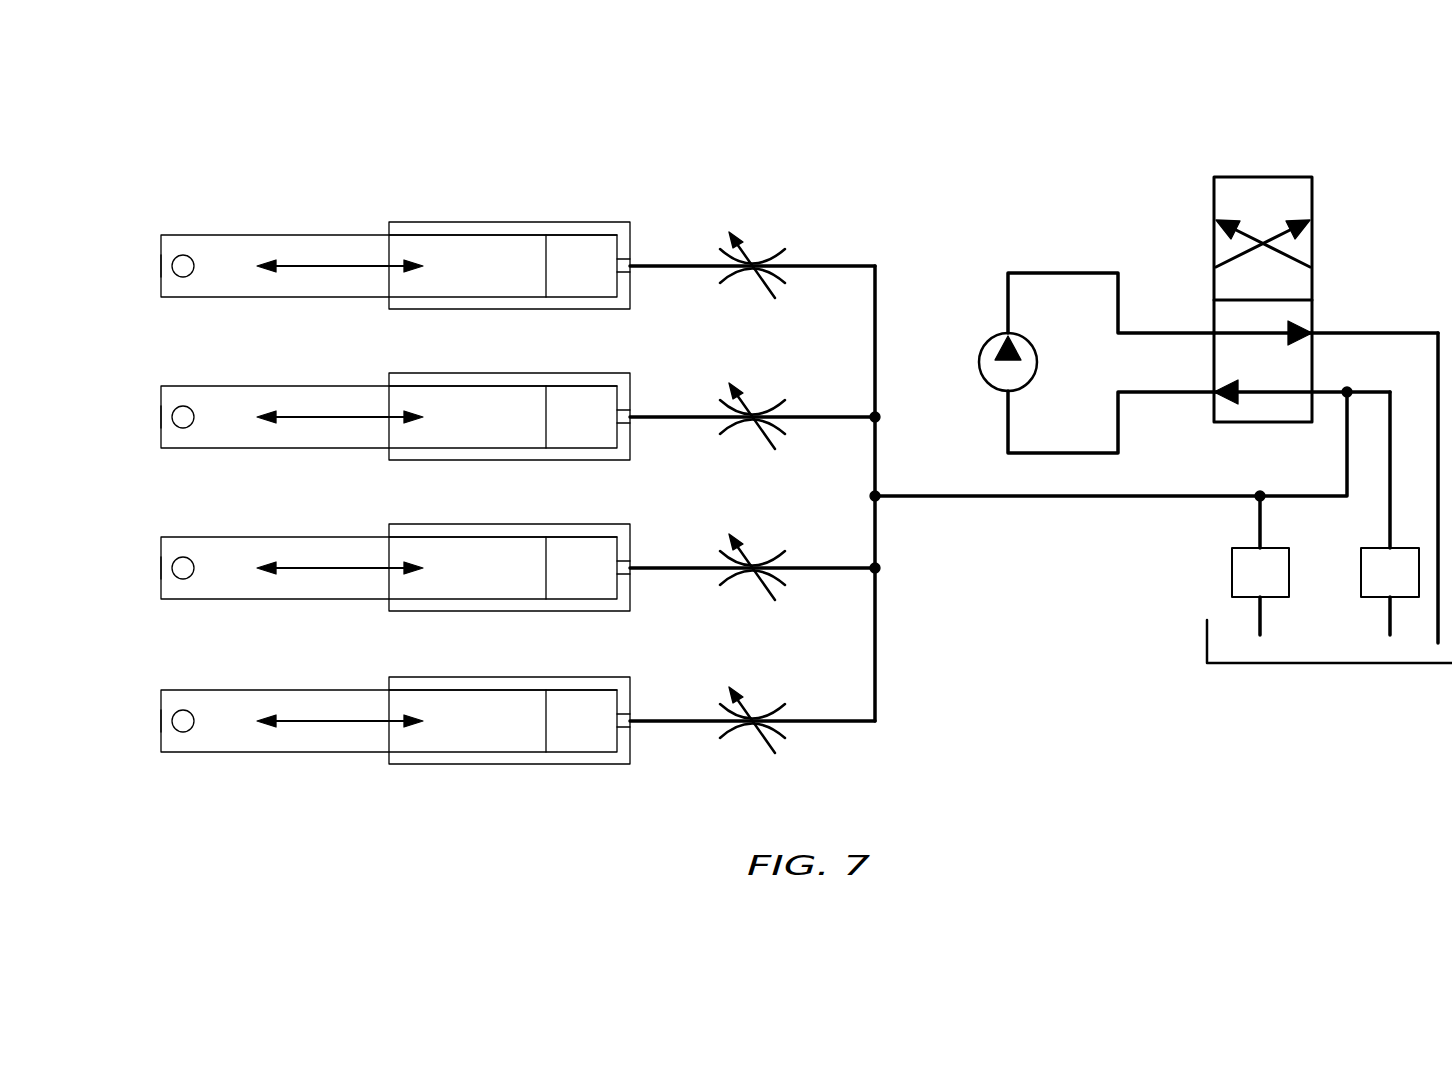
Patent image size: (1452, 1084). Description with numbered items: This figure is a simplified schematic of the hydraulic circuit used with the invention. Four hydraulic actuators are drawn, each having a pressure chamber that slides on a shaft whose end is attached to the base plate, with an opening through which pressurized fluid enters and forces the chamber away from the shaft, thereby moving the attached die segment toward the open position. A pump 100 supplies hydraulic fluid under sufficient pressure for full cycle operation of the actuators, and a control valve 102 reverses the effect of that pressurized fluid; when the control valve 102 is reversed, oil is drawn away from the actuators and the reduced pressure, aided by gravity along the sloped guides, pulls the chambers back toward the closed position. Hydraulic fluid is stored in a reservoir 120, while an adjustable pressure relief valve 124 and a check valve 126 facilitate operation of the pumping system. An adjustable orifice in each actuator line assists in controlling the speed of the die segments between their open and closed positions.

The pump 100 is at (984, 378).
The control valve 102 is at (1258, 190).
The reservoir 120 is at (1225, 665).
The adjustable pressure relief valve 124 is at (1409, 588).
The check valve 126 is at (1279, 588).